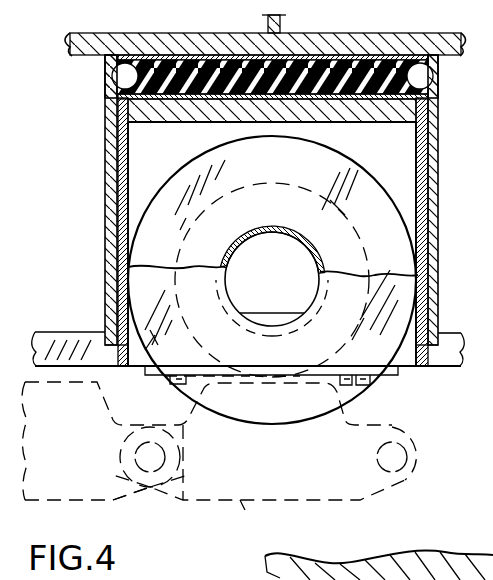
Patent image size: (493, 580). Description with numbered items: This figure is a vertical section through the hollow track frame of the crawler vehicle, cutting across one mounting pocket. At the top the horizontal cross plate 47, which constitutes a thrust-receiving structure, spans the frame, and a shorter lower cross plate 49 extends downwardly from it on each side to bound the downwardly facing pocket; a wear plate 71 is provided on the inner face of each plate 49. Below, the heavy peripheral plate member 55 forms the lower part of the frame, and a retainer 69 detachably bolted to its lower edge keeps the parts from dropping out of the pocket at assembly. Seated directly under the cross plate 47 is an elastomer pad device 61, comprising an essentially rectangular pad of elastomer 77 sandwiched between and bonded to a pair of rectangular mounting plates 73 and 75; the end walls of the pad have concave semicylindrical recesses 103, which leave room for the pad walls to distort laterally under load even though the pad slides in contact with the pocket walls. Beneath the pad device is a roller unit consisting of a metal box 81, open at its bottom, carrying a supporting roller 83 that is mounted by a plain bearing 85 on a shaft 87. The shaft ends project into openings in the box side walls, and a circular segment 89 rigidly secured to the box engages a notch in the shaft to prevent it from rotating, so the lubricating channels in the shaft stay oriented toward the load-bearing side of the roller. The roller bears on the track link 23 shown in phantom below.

The track link 23 is at (113, 500).
The horizontal cross plate 47 is at (323, 33).
The lower cross plate 49 is at (106, 202).
The peripheral plate member 55 is at (68, 333).
The elastomer pad device 61 is at (177, 103).
The retainer 69 is at (346, 394).
The wear plate 71 is at (123, 240).
The mounting plate 73 is at (135, 58).
The mounting plate 75 is at (178, 110).
The pad of elastomer 77 is at (207, 72).
The metal box 81 is at (372, 157).
The supporting roller 83 is at (252, 167).
The plain bearing 85 is at (322, 246).
The shaft 87 is at (259, 289).
The circular segment 89 is at (282, 322).
The recess 103 is at (124, 78).